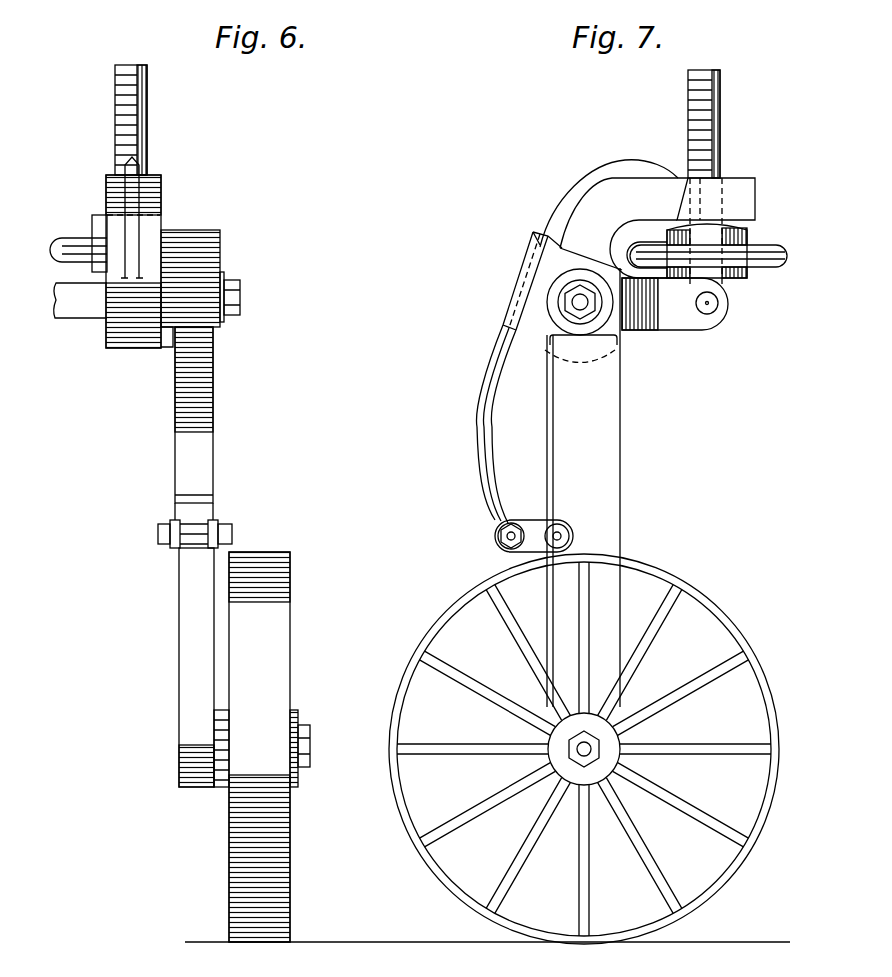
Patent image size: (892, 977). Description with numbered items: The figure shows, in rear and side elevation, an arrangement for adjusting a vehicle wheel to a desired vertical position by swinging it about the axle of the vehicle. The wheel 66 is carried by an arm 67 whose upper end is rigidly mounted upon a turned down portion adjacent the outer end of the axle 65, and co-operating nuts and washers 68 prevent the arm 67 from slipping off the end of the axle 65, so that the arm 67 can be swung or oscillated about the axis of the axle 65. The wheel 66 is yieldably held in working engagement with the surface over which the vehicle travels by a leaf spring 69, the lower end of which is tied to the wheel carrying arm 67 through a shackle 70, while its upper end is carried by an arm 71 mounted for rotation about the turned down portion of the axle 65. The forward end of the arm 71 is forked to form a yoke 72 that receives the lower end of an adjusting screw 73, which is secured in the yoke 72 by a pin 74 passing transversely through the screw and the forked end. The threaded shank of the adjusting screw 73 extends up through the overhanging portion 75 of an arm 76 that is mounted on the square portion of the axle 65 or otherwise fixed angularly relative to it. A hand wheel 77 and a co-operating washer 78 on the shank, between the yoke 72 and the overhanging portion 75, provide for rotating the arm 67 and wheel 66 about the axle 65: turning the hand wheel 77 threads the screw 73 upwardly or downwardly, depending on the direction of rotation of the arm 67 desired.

In FIG. 6, the axle 65 is at (78, 310).
In FIG. 7, the axle 65 is at (562, 300).
In FIG. 6, the wheel 66 is at (292, 570).
In FIG. 7, the wheel 66 is at (725, 622).
In FIG. 6, the arm 67 is at (178, 643).
In FIG. 7, the arm 67 is at (622, 482).
In FIG. 6, the nuts and washers 68 is at (232, 280).
In FIG. 7, the nuts and washers 68 is at (560, 308).
In FIG. 6, the leaf spring 69 is at (213, 472).
In FIG. 7, the leaf spring 69 is at (476, 470).
In FIG. 6, the shackle 70 is at (160, 528).
In FIG. 7, the shackle 70 is at (496, 541).
In FIG. 6, the arm 71 is at (200, 228).
In FIG. 7, the arm 71 is at (566, 256).
In FIG. 7, the yoke 72 is at (704, 322).
In FIG. 6, the adjusting screw 73 is at (150, 130).
In FIG. 7, the adjusting screw 73 is at (723, 108).
In FIG. 7, the pin 74 is at (724, 306).
In FIG. 7, the overhanging portion 75 is at (748, 188).
In FIG. 6, the arm 76 is at (160, 190).
In FIG. 7, the arm 76 is at (580, 215).
In FIG. 6, the hand wheel 77 is at (72, 240).
In FIG. 7, the hand wheel 77 is at (752, 268).
In FIG. 7, the washer 78 is at (740, 231).